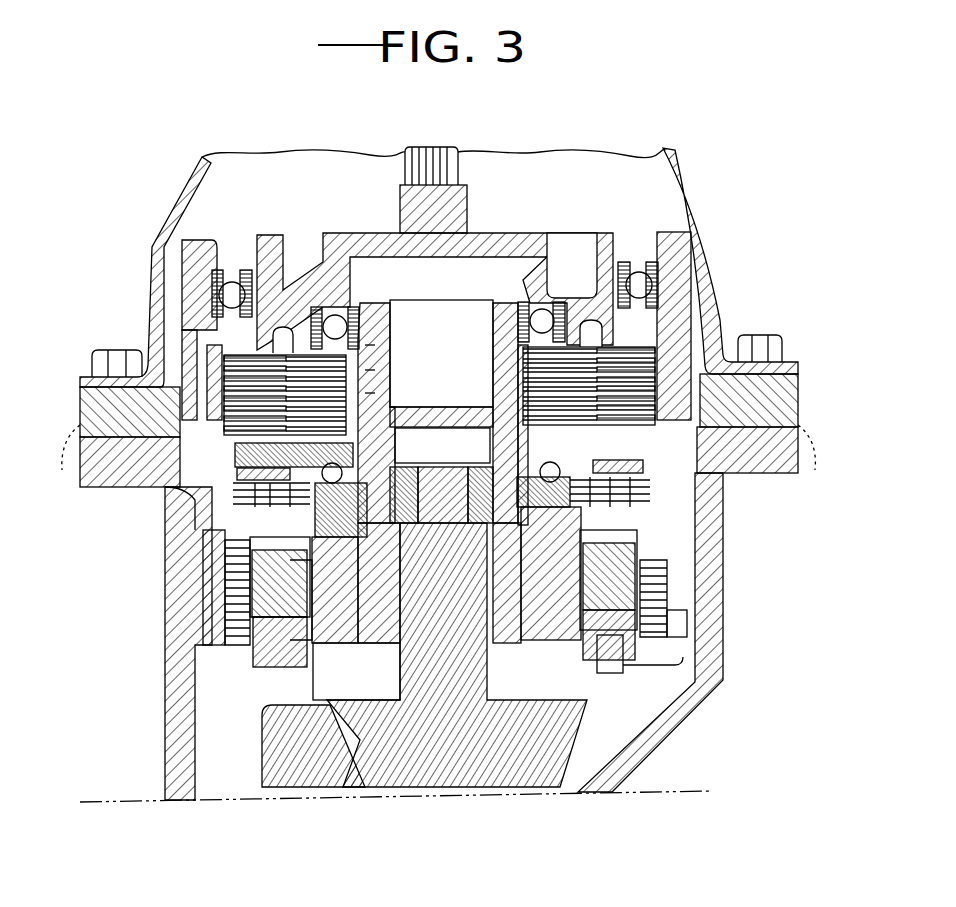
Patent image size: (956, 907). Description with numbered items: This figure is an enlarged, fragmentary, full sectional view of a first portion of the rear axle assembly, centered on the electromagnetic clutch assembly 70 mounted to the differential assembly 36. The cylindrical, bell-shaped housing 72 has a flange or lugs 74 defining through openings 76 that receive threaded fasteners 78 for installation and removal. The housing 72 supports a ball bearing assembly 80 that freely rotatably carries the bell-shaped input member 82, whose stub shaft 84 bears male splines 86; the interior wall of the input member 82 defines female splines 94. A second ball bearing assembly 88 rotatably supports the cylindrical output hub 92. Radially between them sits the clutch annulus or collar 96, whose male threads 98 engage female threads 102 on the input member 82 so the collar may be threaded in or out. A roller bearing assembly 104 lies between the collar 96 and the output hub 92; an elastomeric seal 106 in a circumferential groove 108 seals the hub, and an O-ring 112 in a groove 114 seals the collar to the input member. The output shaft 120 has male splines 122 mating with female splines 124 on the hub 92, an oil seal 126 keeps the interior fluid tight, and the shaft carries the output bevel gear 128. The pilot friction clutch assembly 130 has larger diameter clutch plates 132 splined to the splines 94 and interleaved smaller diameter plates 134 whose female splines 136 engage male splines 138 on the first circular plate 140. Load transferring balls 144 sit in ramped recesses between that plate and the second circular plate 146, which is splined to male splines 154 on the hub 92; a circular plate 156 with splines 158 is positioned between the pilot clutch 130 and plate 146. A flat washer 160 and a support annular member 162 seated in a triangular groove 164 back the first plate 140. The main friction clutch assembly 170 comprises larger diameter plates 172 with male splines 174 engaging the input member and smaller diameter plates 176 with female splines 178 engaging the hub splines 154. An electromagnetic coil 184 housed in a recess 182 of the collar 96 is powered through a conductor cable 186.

The differential assembly 36 is at (124, 91).
The electromagnetic clutch assembly 70 is at (74, 206).
The housing 72 is at (152, 247).
The flange or lugs 74 is at (80, 412).
The through openings 76 is at (438, 456).
The threaded fasteners 78 is at (760, 335).
The ball bearing assembly 80 is at (637, 280).
The input member 82 is at (345, 242).
The stub shaft 84 is at (470, 210).
The male splines 86 is at (408, 170).
The ball bearing assembly 88 is at (540, 310).
The output hub 92 is at (527, 300).
The female splines 94 is at (696, 493).
The clutch annulus or collar 96 is at (210, 645).
The male threads 98 is at (210, 566).
The female threads 102 is at (215, 598).
The roller bearing assembly 104 is at (325, 660).
The elastomeric seal 106 is at (497, 640).
The circumferential groove 108 is at (551, 661).
The O-ring 112 is at (695, 548).
The circumferential groove 114 is at (690, 572).
The output shaft 120 is at (410, 675).
The male splines 122 is at (360, 659).
The female splines 124 is at (405, 592).
The oil seal 126 is at (427, 462).
The output bevel gear 128 is at (440, 773).
The pilot friction clutch assembly 130 is at (104, 565).
The larger diameter clutch plates 132 is at (205, 498).
The smaller diameter clutch plates 134 is at (205, 528).
The female splines 136 is at (300, 519).
The male splines 138 is at (205, 470).
The first circular plate 140 is at (385, 395).
The load transferring ball 144 is at (490, 492).
The second circular plate 146 is at (678, 420).
The male splines 154 is at (495, 340).
The circular plate 156 is at (695, 525).
The splines 158 is at (700, 515).
The flat washer 160 is at (470, 550).
The support annular member 162 is at (510, 378).
The triangular groove 164 is at (583, 560).
The main friction clutch assembly 170 is at (108, 332).
The larger diameter clutch plates 172 is at (223, 392).
The male splines 174 is at (226, 416).
The smaller diameter plates 176 is at (385, 352).
The female splines 178 is at (385, 373).
The recess 182 is at (270, 665).
The electromagnetic coil 184 is at (298, 598).
The conductor cable 186 is at (705, 660).